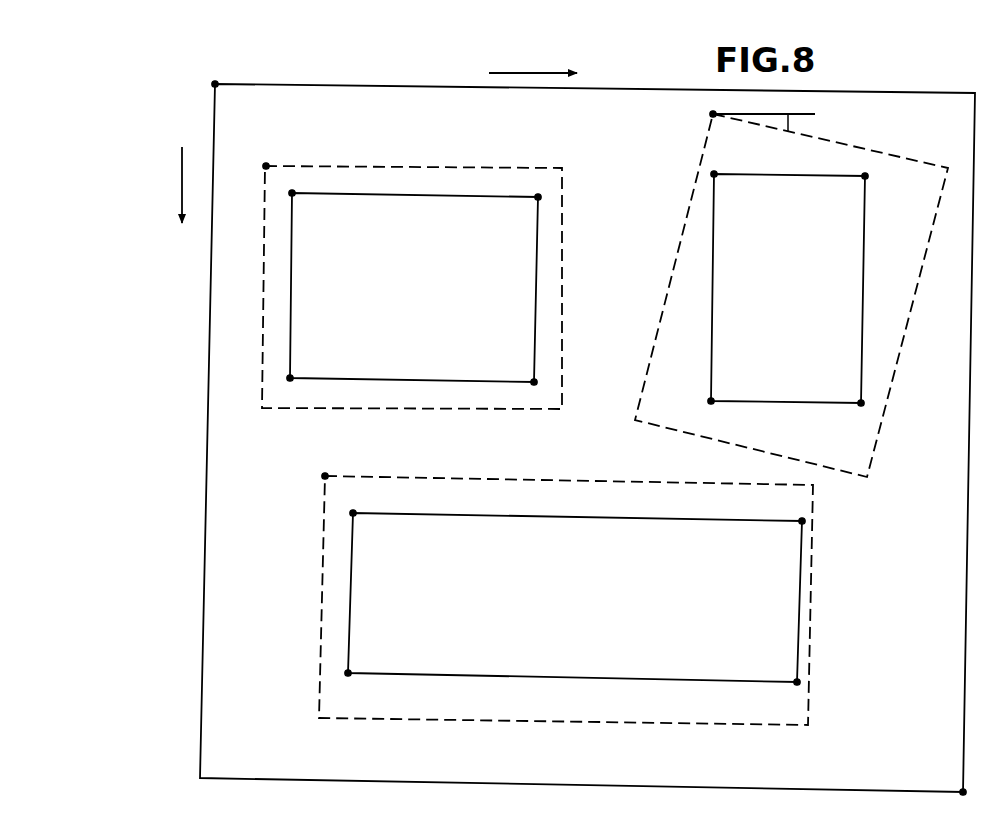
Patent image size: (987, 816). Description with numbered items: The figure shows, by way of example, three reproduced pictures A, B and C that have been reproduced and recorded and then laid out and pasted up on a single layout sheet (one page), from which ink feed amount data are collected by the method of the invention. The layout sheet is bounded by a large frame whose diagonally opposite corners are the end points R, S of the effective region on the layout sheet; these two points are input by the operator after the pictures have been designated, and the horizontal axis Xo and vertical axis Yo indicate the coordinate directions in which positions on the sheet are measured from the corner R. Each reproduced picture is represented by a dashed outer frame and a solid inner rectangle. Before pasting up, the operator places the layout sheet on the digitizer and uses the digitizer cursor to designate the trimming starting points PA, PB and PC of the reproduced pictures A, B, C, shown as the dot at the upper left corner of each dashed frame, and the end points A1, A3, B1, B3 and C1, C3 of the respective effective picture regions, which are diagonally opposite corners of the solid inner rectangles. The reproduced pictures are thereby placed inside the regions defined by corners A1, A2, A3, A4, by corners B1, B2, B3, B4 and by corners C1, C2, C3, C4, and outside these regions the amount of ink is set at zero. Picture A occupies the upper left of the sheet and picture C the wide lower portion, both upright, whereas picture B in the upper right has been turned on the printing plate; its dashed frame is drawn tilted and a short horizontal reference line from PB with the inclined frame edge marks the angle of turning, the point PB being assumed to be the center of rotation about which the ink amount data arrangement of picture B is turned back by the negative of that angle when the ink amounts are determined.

The end point of effective region on layout sheet R is at (582, 427).
The end point of effective region on layout sheet S is at (973, 792).
The horizontal coordinate axis Xo is at (547, 73).
The vertical coordinate axis Yo is at (181, 199).
The reproduced picture A is at (412, 161).
The trimming starting point of reproduced picture A PA is at (252, 153).
The end point of effective picture region of picture A A1 is at (405, 273).
The corner of effective picture region of picture A A2 is at (282, 390).
The end point of effective picture region of picture A A3 is at (538, 394).
The corner of effective picture region of picture A A4 is at (542, 184).
The reproduced picture B is at (872, 148).
The trimming starting point of reproduced picture B PB is at (744, 110).
The end point of effective picture region of picture B B1 is at (786, 274).
The corner of effective picture region of picture B B2 is at (707, 413).
The end point of effective picture region of picture B B3 is at (857, 414).
The corner of effective picture region of picture B B4 is at (859, 162).
The reproduced picture C is at (462, 477).
The trimming starting point of reproduced picture C PC is at (317, 463).
The end point of effective picture region of picture C C1 is at (572, 583).
The corner of effective picture region of picture C C2 is at (348, 685).
The end point of effective picture region of picture C C3 is at (789, 694).
The corner of effective picture region of picture C C4 is at (794, 508).